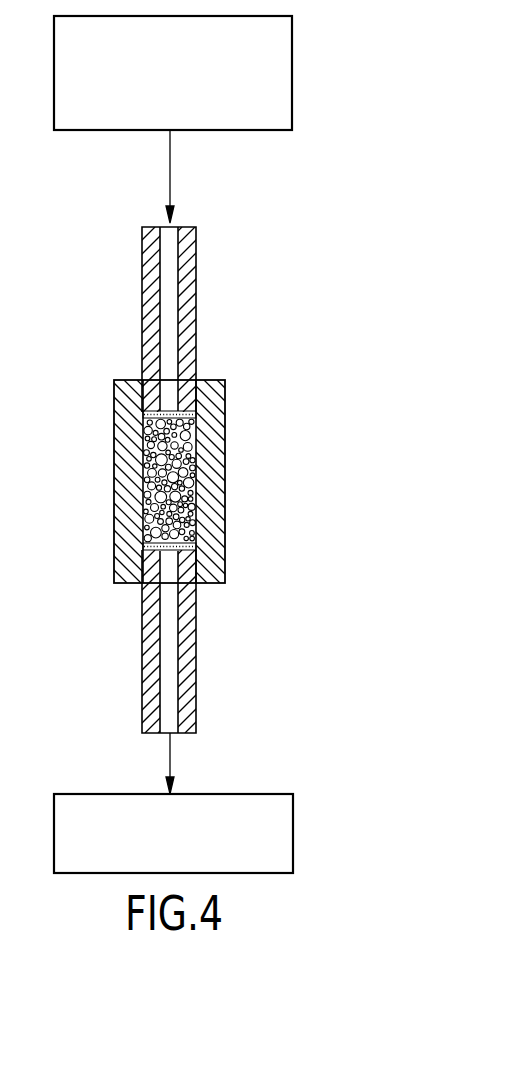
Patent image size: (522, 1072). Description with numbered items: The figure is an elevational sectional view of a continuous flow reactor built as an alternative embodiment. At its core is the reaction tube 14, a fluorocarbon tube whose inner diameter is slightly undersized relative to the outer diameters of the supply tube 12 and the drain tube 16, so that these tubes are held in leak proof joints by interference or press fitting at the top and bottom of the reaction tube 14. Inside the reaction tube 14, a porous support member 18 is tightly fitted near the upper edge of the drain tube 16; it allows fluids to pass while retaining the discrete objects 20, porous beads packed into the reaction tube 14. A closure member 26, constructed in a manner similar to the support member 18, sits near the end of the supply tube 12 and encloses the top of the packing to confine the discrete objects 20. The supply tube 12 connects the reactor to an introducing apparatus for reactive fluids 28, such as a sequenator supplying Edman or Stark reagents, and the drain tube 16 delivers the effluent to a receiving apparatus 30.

The supply tube 12 is at (192, 297).
The reaction tube 14 is at (220, 452).
The drain tube 16 is at (192, 630).
The porous support member 18 is at (197, 542).
The discrete objects 20 is at (178, 505).
The closure member 26 is at (145, 418).
The apparatus for introducing reactive fluids 28 is at (292, 73).
The receiving apparatus 30 is at (293, 850).